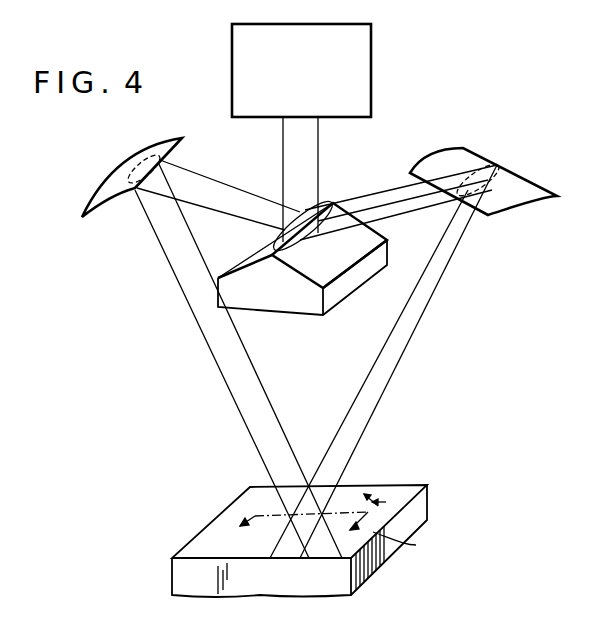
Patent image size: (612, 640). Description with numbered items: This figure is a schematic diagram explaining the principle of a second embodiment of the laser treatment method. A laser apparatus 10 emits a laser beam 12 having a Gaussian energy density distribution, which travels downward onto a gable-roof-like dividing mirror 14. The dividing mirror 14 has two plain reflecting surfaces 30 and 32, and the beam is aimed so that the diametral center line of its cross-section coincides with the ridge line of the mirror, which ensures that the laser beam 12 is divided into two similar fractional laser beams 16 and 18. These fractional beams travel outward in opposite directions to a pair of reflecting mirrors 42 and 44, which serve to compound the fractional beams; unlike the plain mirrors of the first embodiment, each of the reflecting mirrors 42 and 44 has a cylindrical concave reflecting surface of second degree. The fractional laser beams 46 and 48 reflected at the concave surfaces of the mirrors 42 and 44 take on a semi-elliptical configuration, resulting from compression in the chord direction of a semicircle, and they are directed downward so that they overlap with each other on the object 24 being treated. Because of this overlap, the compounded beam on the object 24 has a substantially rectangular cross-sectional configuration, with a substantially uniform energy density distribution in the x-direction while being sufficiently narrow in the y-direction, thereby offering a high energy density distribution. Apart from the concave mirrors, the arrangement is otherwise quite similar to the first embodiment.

The laser apparatus 10 is at (371, 78).
The laser beam 12 is at (318, 150).
The dividing mirror 14 is at (297, 307).
The fractional laser beam 16 is at (403, 199).
The fractional laser beam 18 is at (257, 196).
The object being treated 24 is at (230, 512).
The plain reflecting surface 30 is at (340, 262).
The plain reflecting surface 32 is at (257, 250).
The reflecting mirror 42 is at (475, 155).
The reflecting mirror 44 is at (134, 157).
The fractional laser beam 46 is at (430, 298).
The fractional laser beam 48 is at (203, 331).